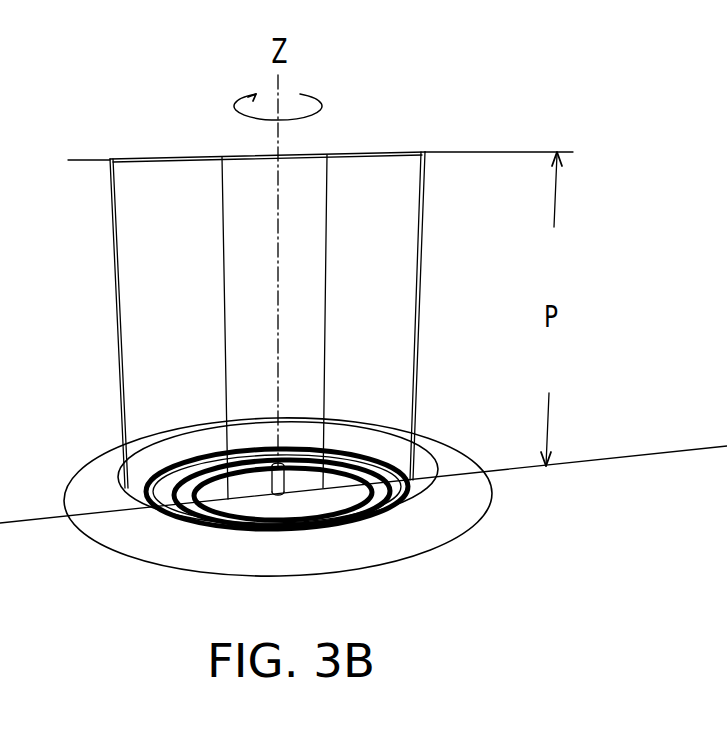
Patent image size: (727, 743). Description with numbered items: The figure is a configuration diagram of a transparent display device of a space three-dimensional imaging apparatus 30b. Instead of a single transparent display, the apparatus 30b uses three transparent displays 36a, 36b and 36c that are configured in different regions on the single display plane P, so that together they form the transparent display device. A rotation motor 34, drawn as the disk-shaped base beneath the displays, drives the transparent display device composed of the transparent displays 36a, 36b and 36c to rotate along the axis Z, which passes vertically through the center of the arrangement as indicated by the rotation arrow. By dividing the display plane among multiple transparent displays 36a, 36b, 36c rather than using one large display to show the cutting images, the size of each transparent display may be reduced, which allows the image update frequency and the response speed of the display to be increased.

The space three-dimensional imaging apparatus 30b is at (625, 613).
The rotation motor 34 is at (128, 560).
The transparent display 36a is at (132, 157).
The transparent display 36b is at (247, 155).
The transparent display 36c is at (394, 152).